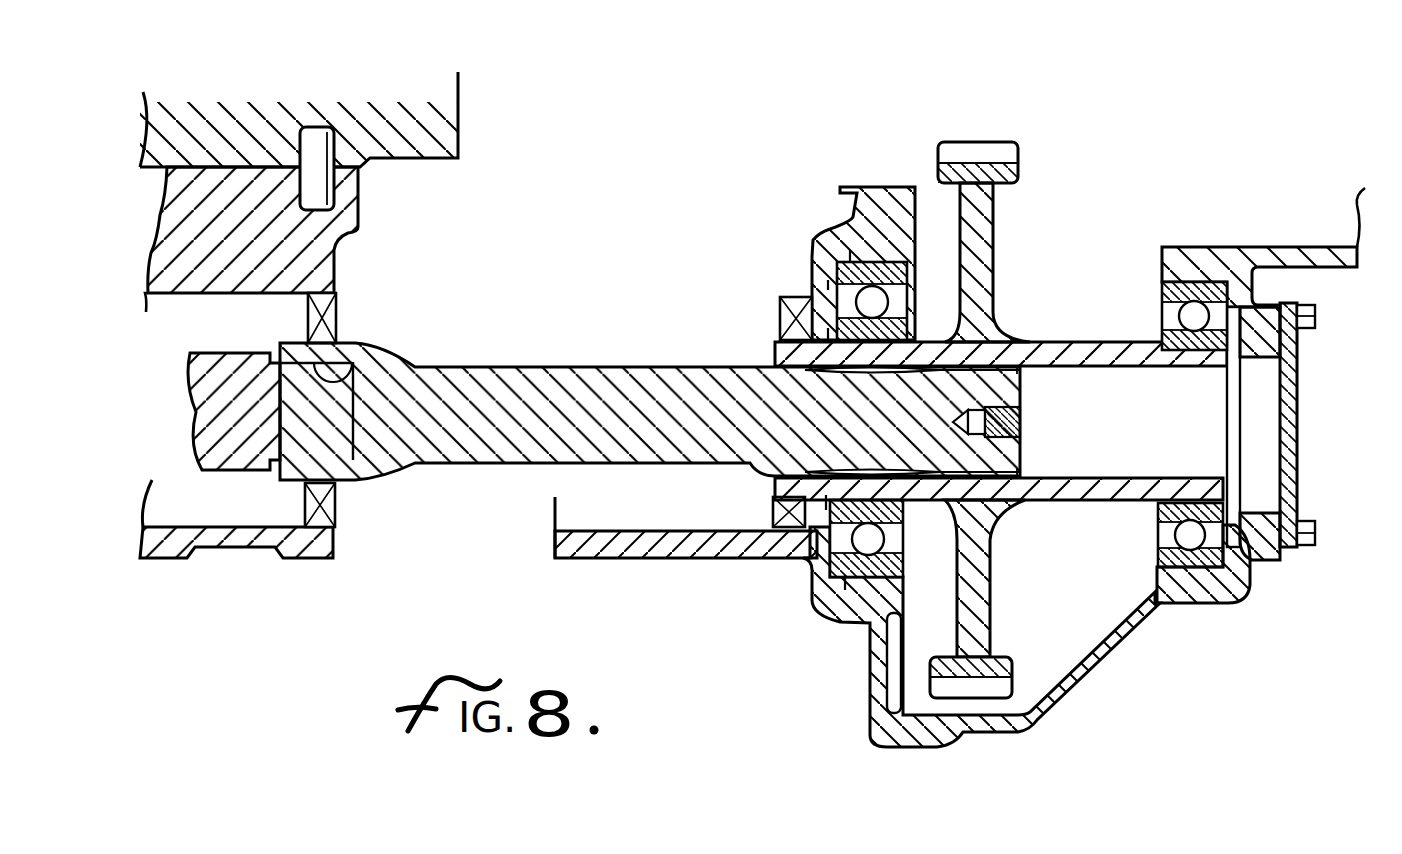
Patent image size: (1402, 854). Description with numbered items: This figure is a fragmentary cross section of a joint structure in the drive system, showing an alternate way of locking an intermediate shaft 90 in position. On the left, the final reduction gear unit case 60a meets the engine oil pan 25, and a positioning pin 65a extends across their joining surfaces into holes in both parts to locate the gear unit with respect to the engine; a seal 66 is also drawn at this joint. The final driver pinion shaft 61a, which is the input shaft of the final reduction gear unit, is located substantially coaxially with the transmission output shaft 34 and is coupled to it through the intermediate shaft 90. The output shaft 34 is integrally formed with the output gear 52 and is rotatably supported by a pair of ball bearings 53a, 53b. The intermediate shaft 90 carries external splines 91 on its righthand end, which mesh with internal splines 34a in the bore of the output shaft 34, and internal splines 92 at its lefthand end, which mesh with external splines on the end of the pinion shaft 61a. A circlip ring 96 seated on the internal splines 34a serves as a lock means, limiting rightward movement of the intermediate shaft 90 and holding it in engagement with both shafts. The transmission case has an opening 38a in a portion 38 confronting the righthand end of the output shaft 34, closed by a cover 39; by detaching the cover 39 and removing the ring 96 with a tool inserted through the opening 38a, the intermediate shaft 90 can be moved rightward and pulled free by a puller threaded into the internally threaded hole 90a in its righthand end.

The oil pan 25 is at (458, 103).
The final reduction gear unit case 60a is at (313, 247).
The positioning pin 65a is at (318, 127).
The seal 66 is at (340, 306).
The final driver pinion shaft 61a is at (208, 373).
The intermediate shaft 90 is at (563, 382).
The internal splines 92 is at (362, 358).
The external splines 91 is at (1028, 375).
The circlip ring 96 is at (1040, 466).
The internally threaded hole 90a is at (1028, 426).
The ball bearing 53a is at (830, 272).
The output gear 52 is at (985, 242).
The internal splines 34a is at (1072, 376).
The transmission output shaft 34 is at (1068, 503).
The cover 39 is at (1298, 407).
The opening 38a is at (1257, 510).
The ball bearing 53b is at (1160, 302).
The transmission case portion 38 is at (1190, 606).